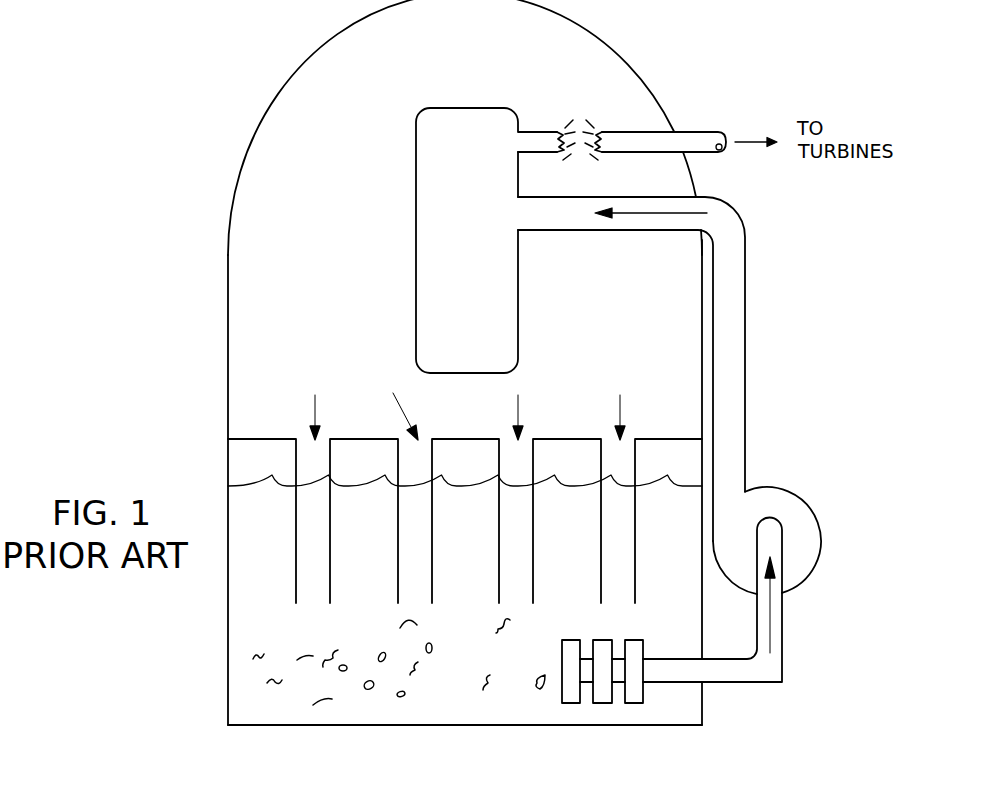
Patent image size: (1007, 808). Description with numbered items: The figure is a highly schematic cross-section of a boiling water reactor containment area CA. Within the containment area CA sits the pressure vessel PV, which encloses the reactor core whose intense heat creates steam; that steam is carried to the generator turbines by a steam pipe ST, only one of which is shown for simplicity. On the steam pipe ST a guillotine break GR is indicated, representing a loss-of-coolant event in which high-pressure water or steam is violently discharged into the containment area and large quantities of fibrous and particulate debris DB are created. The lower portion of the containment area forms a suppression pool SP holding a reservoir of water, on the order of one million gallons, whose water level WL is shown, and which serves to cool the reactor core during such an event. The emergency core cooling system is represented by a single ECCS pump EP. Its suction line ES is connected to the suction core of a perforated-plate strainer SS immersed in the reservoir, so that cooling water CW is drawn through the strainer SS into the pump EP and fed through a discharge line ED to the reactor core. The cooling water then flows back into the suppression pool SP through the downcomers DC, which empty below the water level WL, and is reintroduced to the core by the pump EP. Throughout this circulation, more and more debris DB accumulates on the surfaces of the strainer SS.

The containment area CA is at (274, 236).
The pressure vessel PV is at (428, 143).
The steam pipe ST is at (705, 131).
The guillotine break GR is at (580, 113).
The cooling water CW is at (729, 255).
The discharge line ED is at (729, 320).
The ECCS pump EP is at (777, 500).
The suction line ES is at (740, 684).
The perforated-plate strainer SS is at (603, 703).
The downcomer DC is at (306, 443).
The water level WL is at (250, 482).
The suppression pool SP is at (248, 628).
The debris DB is at (368, 690).